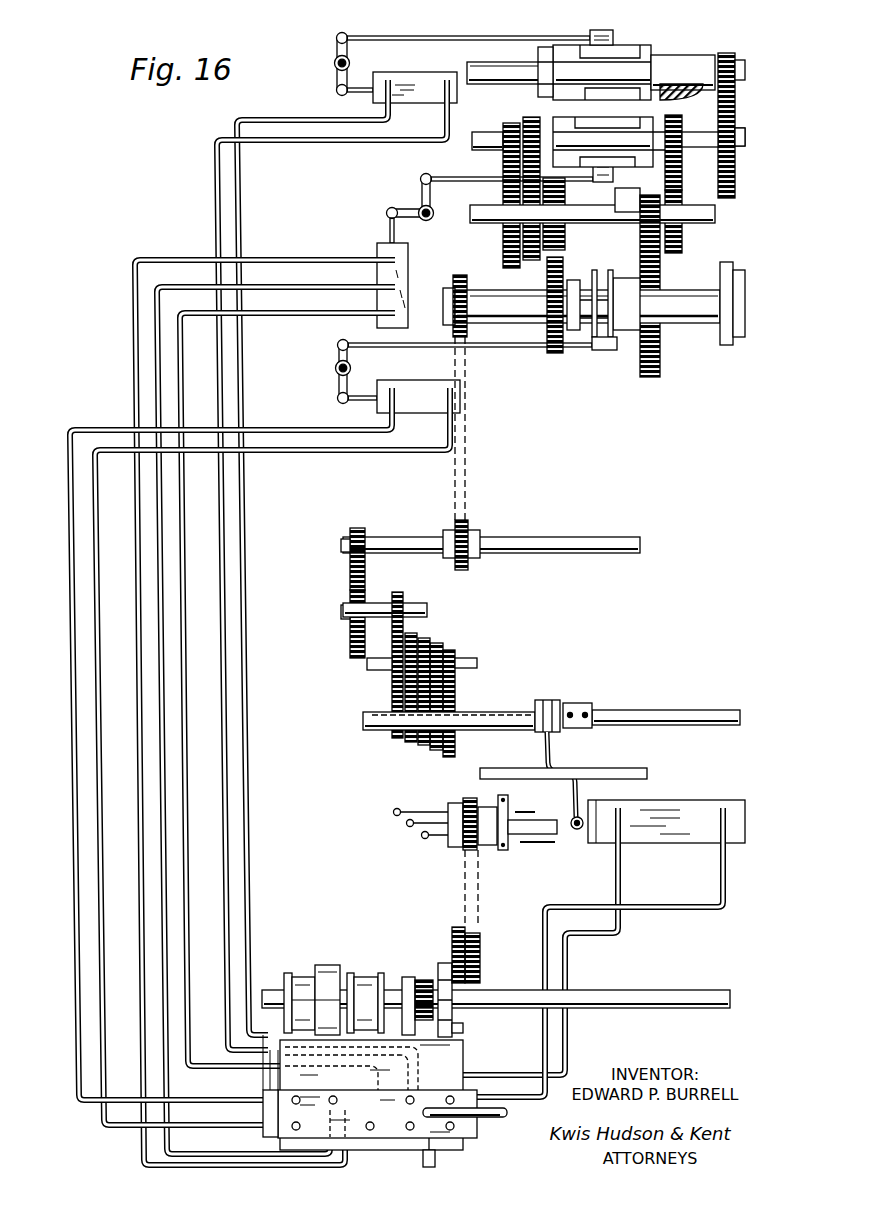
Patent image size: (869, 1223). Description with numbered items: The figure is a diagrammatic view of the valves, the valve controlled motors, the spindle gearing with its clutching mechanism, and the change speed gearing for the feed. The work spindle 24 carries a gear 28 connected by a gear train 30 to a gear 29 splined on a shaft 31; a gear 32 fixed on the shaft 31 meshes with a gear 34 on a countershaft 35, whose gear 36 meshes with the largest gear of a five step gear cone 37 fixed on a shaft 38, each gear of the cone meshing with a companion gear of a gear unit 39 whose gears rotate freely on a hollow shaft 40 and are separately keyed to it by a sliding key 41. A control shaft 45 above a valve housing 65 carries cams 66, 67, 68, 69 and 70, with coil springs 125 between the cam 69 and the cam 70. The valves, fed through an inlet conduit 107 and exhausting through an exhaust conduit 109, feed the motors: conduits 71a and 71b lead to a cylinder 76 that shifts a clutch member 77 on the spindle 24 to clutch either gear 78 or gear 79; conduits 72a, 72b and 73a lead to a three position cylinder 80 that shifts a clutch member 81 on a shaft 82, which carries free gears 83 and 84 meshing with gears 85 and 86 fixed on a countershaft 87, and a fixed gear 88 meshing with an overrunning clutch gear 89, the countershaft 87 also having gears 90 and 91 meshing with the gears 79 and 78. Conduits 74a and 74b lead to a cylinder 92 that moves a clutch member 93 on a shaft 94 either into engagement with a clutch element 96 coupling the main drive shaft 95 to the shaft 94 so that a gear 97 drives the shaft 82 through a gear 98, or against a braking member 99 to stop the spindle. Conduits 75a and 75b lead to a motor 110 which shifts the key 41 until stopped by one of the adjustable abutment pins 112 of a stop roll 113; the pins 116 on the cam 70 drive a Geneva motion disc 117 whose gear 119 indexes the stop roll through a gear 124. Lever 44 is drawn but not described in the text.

The work spindle 24 is at (700, 323).
The gear 28 is at (458, 275).
The gear 29 is at (470, 525).
The gear train 30 is at (468, 470).
The shaft 31 is at (390, 540).
The gear 32 is at (358, 528).
The gear 34 is at (350, 595).
The countershaft 35 is at (375, 603).
The gear 36 is at (400, 595).
The gear cone 37 is at (420, 640).
The shaft 38 is at (465, 658).
The gear unit 39 is at (425, 750).
The hollow shaft 40 is at (485, 730).
The sliding key 41 is at (492, 712).
The shifter lever 44 is at (570, 772).
The control shaft 45 is at (655, 990).
The valve housing 65 is at (463, 1062).
The cam 66 is at (303, 977).
The cam 67 is at (330, 965).
The cam 68 is at (365, 977).
The cam 69 is at (408, 977).
The cam 70 is at (444, 963).
The conduit 71a is at (72, 805).
The conduit 71b is at (102, 805).
The conduit 72a is at (146, 912).
The conduit 72b is at (172, 912).
The conduit 73a is at (188, 850).
The conduit 74a is at (222, 662).
The conduit 74b is at (250, 662).
The conduit 75a is at (540, 1070).
The conduit 75b is at (560, 1050).
The motor or cylinder 76 is at (415, 392).
The shiftable clutch member 77 is at (600, 278).
The gear 78 is at (563, 272).
The gear 79 is at (660, 273).
The motor or cylinder 80 is at (380, 255).
The shiftable clutch member 81 is at (590, 125).
The shaft 82 is at (490, 132).
The gear 83 is at (683, 125).
The gear 84 is at (531, 117).
The gear 85 is at (683, 200).
The gear 86 is at (531, 260).
The countershaft 87 is at (622, 205).
The gear 88 is at (511, 123).
The gear 89 is at (503, 258).
The gear 90 is at (636, 190).
The gear 91 is at (565, 232).
The motor or cylinder 92 is at (418, 80).
The shiftable clutch member 93 is at (612, 32).
The shaft 94 is at (628, 50).
The main drive shaft 95 is at (500, 62).
The clutch element 96 is at (548, 47).
The gear 97 is at (732, 53).
The gear 98 is at (742, 128).
The braking member 99 is at (678, 55).
The inlet conduit 107 is at (507, 1112).
The exhaust conduit 109 is at (436, 1158).
The motor 110 is at (668, 800).
The adjustable abutment pins 112 is at (534, 834).
The stop roll 113 is at (492, 845).
The pins 116 is at (463, 1028).
The Geneva motion disc 117 is at (457, 927).
The gear 119 is at (480, 945).
The gear 124 is at (468, 798).
The coil springs 125 is at (424, 980).